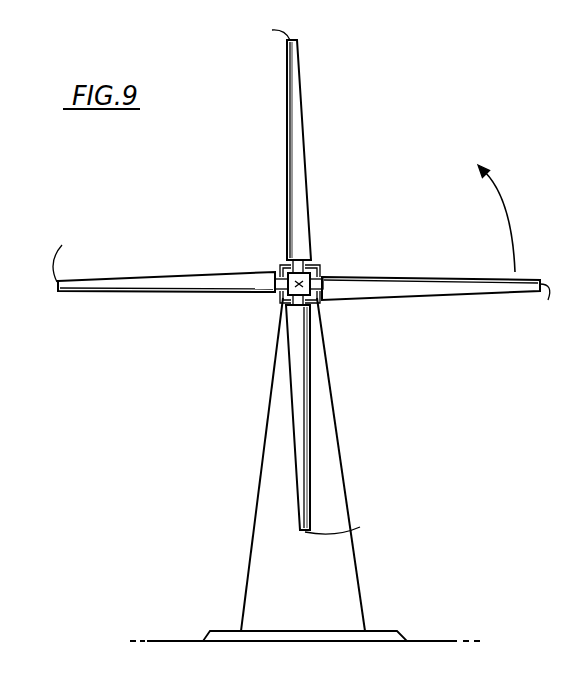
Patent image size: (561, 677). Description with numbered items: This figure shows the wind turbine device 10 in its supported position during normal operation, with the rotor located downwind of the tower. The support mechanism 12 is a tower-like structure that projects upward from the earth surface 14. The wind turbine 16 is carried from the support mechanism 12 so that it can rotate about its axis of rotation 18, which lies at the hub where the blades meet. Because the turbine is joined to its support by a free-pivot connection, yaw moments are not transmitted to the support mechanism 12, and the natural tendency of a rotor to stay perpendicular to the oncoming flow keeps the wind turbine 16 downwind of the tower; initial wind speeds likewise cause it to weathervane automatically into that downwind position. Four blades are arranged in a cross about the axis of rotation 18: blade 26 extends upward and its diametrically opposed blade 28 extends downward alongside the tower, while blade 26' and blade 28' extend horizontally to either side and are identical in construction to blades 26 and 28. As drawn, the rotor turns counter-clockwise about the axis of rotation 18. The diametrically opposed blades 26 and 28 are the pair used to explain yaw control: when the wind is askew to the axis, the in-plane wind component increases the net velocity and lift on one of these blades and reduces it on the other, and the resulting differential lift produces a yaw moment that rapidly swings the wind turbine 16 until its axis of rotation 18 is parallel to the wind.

The wind turbine device 10 is at (409, 121).
The support mechanism 12 is at (357, 557).
The earth surface 14 is at (420, 640).
The wind turbine 16 is at (324, 134).
The axis of rotation 18 is at (302, 281).
The blade 26 is at (258, 144).
The blade 26' is at (430, 281).
The blade 28 is at (348, 418).
The blade 28' is at (170, 264).